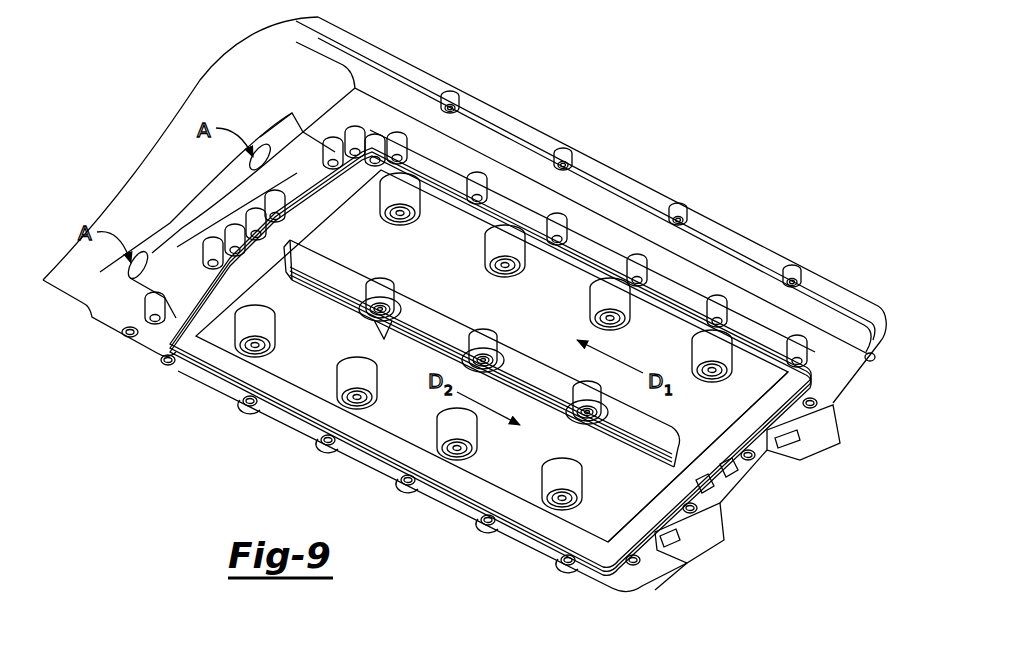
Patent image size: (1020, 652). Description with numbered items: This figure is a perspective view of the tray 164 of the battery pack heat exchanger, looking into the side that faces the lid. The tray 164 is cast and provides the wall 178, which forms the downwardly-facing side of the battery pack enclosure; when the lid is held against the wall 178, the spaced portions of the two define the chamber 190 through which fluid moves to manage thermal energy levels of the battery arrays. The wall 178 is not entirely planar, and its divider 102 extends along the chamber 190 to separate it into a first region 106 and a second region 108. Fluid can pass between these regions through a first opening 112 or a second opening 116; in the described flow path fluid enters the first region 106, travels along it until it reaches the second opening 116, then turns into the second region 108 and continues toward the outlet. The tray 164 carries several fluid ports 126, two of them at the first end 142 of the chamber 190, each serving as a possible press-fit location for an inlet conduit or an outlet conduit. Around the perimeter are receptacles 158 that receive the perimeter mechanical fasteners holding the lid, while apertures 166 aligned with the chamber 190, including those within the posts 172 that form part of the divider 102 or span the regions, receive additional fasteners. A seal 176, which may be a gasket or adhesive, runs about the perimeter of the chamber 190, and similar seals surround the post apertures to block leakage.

The divider 102 is at (434, 322).
The first region 106 is at (375, 188).
The second region 108 is at (162, 346).
The first opening 112 is at (670, 467).
The second opening 116 is at (215, 262).
The fluid ports 126 is at (263, 148).
The first end 142 is at (768, 488).
The receptacles 158 is at (490, 527).
The tray 164 is at (493, 107).
The apertures 166 is at (497, 363).
The posts 172 is at (386, 333).
The seal 176 is at (380, 457).
The wall 178 is at (207, 328).
The chamber 190 is at (337, 217).